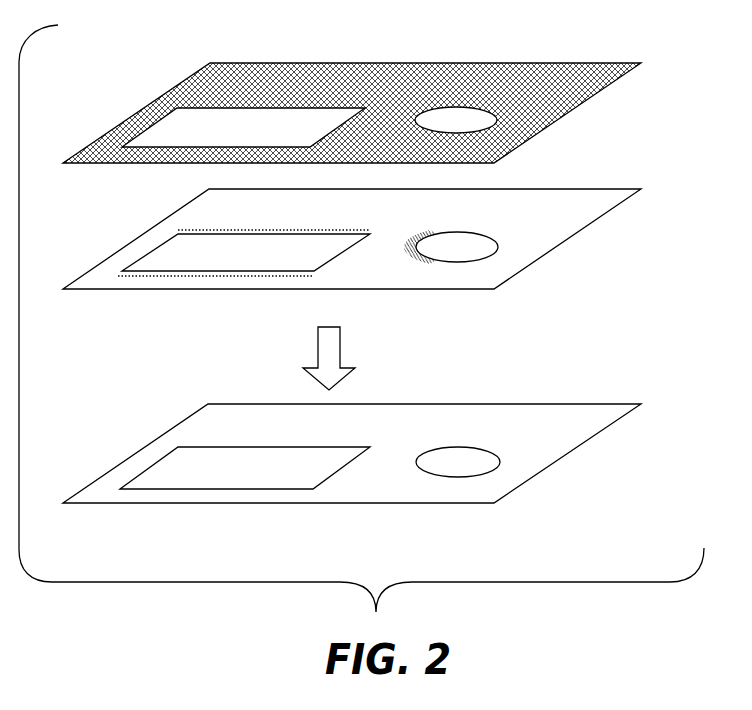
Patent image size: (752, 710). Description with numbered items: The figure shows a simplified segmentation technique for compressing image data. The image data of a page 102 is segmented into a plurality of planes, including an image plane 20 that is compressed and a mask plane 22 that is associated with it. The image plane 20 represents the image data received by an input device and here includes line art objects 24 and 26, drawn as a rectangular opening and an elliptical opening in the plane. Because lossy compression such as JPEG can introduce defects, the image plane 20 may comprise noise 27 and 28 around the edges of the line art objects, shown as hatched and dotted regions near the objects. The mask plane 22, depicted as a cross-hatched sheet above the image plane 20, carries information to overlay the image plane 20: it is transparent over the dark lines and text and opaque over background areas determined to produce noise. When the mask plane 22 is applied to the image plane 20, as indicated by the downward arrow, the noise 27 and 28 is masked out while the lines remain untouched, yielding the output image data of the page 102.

The mask plane 22 is at (614, 85).
The image plane 20 is at (617, 211).
The line art object 24 is at (343, 253).
The line art object 26 is at (291, 229).
The noise 27 is at (407, 233).
The noise 28 is at (250, 277).
The page 102 is at (563, 386).